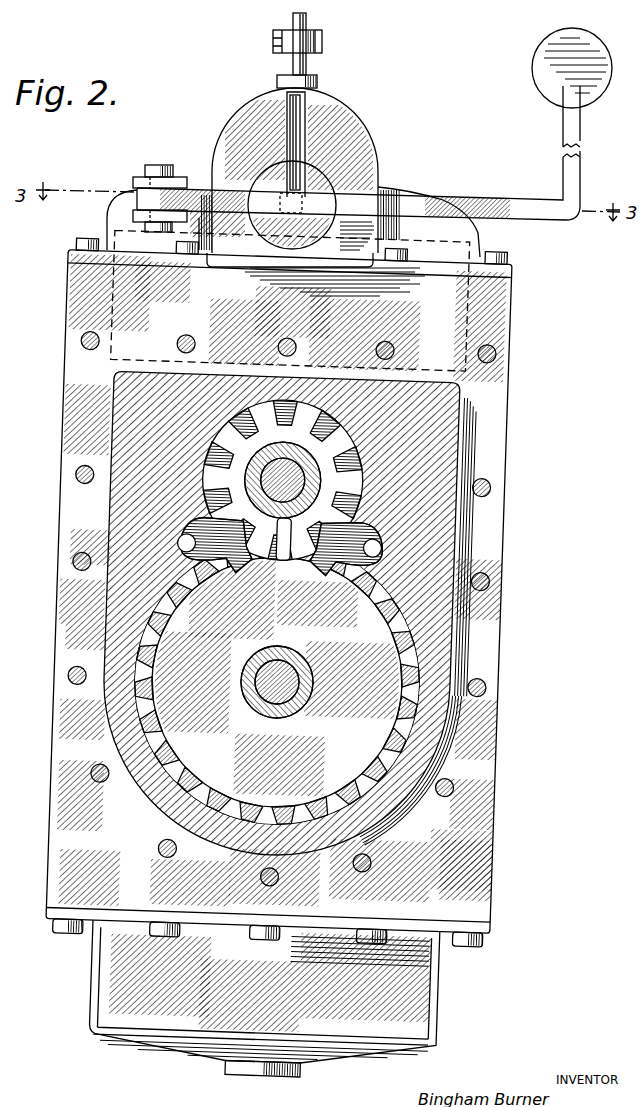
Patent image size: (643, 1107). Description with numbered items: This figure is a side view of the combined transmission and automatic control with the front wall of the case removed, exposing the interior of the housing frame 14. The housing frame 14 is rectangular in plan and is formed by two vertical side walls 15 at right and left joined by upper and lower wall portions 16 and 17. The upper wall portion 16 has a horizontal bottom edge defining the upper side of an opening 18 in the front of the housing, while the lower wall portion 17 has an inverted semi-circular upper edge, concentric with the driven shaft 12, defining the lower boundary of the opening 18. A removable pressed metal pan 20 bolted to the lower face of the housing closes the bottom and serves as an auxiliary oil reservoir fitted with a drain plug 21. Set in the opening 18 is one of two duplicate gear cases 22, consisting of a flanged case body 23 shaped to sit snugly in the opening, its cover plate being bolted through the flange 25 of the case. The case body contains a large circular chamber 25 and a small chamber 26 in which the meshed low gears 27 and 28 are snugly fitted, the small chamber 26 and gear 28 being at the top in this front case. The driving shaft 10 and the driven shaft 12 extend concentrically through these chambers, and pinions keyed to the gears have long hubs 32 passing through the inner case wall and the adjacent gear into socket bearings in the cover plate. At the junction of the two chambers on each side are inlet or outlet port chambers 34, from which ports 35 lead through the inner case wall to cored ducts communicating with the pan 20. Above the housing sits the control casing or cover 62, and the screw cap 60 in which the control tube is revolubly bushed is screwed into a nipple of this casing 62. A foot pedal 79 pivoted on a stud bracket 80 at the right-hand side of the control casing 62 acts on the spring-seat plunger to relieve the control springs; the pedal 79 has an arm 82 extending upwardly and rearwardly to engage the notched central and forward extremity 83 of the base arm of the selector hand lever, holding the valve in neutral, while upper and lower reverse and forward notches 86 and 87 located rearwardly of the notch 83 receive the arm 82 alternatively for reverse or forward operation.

The driving shaft 10 is at (283, 560).
The driven shaft 12 is at (277, 712).
The housing frame 14 is at (490, 756).
The vertical side walls 15 is at (64, 504).
The upper wall portion 16 is at (205, 326).
The lower wall portion 17 is at (329, 906).
The opening 18 is at (98, 639).
The pressed metal pan 20 is at (110, 998).
The drain plug 21 is at (263, 1071).
The gear cases 22 is at (436, 548).
The flanged case body 23 is at (444, 601).
The large circular chamber 25 is at (416, 664).
The small chamber 26 is at (351, 497).
The low gear 27 is at (321, 651).
The low gear 28 is at (311, 469).
The long hub 32 is at (268, 512).
The inlet or outlet port chambers 34 is at (282, 547).
The ports 35 is at (279, 546).
The screw cap 60 is at (327, 183).
The control casing 62 is at (243, 110).
The foot pedal 79 is at (538, 70).
The stud bracket 80 is at (140, 182).
The arm 82 is at (302, 107).
The notched central and forward extremity 83 is at (312, 50).
The upper reverse notch 86 is at (307, 20).
The lower forward notch 87 is at (290, 72).